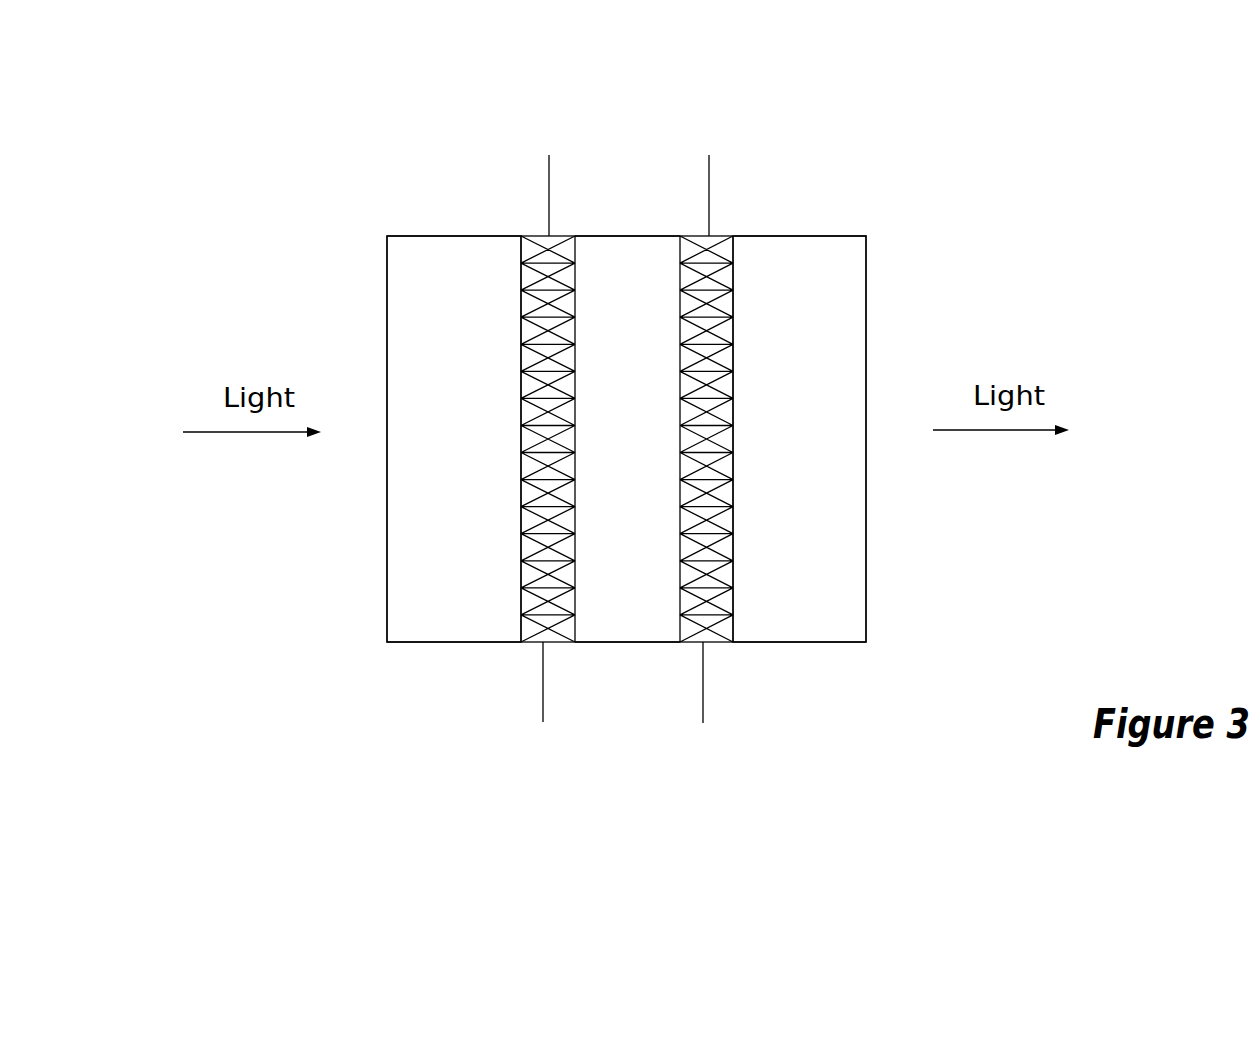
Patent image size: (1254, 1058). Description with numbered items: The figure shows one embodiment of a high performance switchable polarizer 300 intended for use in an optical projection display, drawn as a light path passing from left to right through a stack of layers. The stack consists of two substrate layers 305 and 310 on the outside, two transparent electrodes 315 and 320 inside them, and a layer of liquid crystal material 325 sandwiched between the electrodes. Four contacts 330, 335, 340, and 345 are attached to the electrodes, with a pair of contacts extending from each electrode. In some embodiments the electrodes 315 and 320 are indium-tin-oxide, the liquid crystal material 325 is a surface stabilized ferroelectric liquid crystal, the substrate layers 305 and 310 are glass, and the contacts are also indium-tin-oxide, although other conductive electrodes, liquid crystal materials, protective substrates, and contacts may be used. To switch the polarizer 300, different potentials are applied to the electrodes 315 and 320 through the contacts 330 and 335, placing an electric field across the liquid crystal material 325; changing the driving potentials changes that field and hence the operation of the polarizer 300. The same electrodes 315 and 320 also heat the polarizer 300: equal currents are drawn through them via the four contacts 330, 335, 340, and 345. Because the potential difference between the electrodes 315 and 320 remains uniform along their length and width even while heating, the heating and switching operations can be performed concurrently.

The switchable polarizer 300 is at (601, 94).
The substrate layer 305 is at (445, 643).
The substrate layer 310 is at (790, 643).
The transparent electrode 315 is at (513, 398).
The transparent electrode 320 is at (742, 402).
The layer of liquid crystal material 325 is at (616, 236).
The contact 330 is at (543, 703).
The contact 335 is at (703, 700).
The contact 340 is at (548, 212).
The contact 345 is at (712, 212).